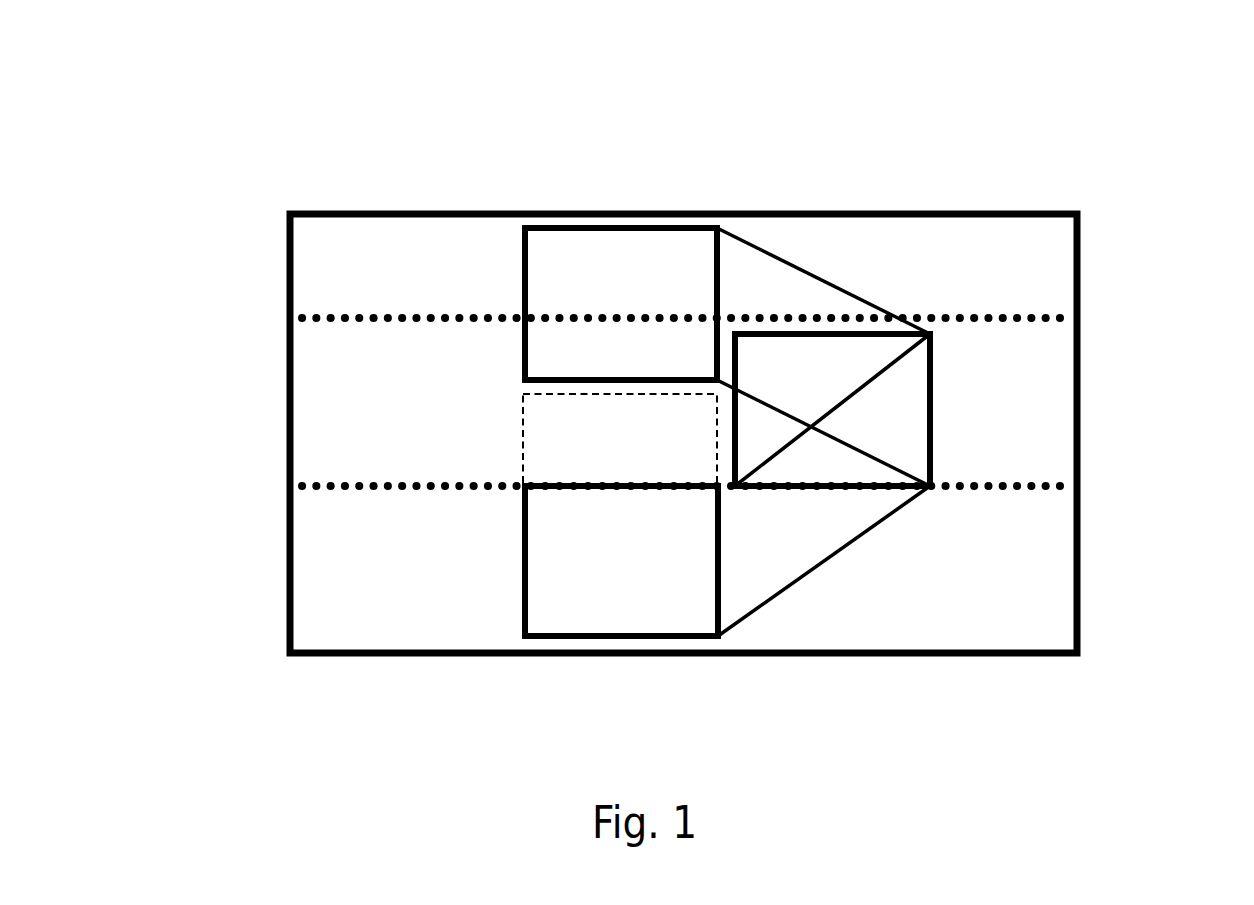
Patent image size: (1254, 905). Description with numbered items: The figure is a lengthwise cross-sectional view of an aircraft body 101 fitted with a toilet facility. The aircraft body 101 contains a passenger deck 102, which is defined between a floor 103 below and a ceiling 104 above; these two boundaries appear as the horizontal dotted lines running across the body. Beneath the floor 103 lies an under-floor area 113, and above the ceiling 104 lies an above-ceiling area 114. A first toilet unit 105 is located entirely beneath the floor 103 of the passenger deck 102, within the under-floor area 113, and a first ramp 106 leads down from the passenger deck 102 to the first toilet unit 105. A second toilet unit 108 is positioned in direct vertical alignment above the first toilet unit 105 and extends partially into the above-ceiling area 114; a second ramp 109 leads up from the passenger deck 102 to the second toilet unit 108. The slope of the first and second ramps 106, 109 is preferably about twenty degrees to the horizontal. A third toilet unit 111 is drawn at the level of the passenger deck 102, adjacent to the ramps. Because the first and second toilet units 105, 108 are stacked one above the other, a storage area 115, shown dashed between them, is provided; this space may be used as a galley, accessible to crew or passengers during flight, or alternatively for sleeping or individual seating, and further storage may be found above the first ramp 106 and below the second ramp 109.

The aircraft body 101 is at (1005, 185).
The passenger deck 102 is at (1020, 398).
The floor 103 is at (1020, 487).
The ceiling 104 is at (1045, 315).
The first toilet unit 105 is at (572, 613).
The first ramp 106 is at (753, 572).
The second toilet unit 108 is at (600, 243).
The second ramp 109 is at (767, 272).
The third toilet unit 111 is at (823, 355).
The under-floor area 113 is at (1007, 602).
The above-ceiling area 114 is at (1048, 242).
The storage area 115 is at (572, 443).